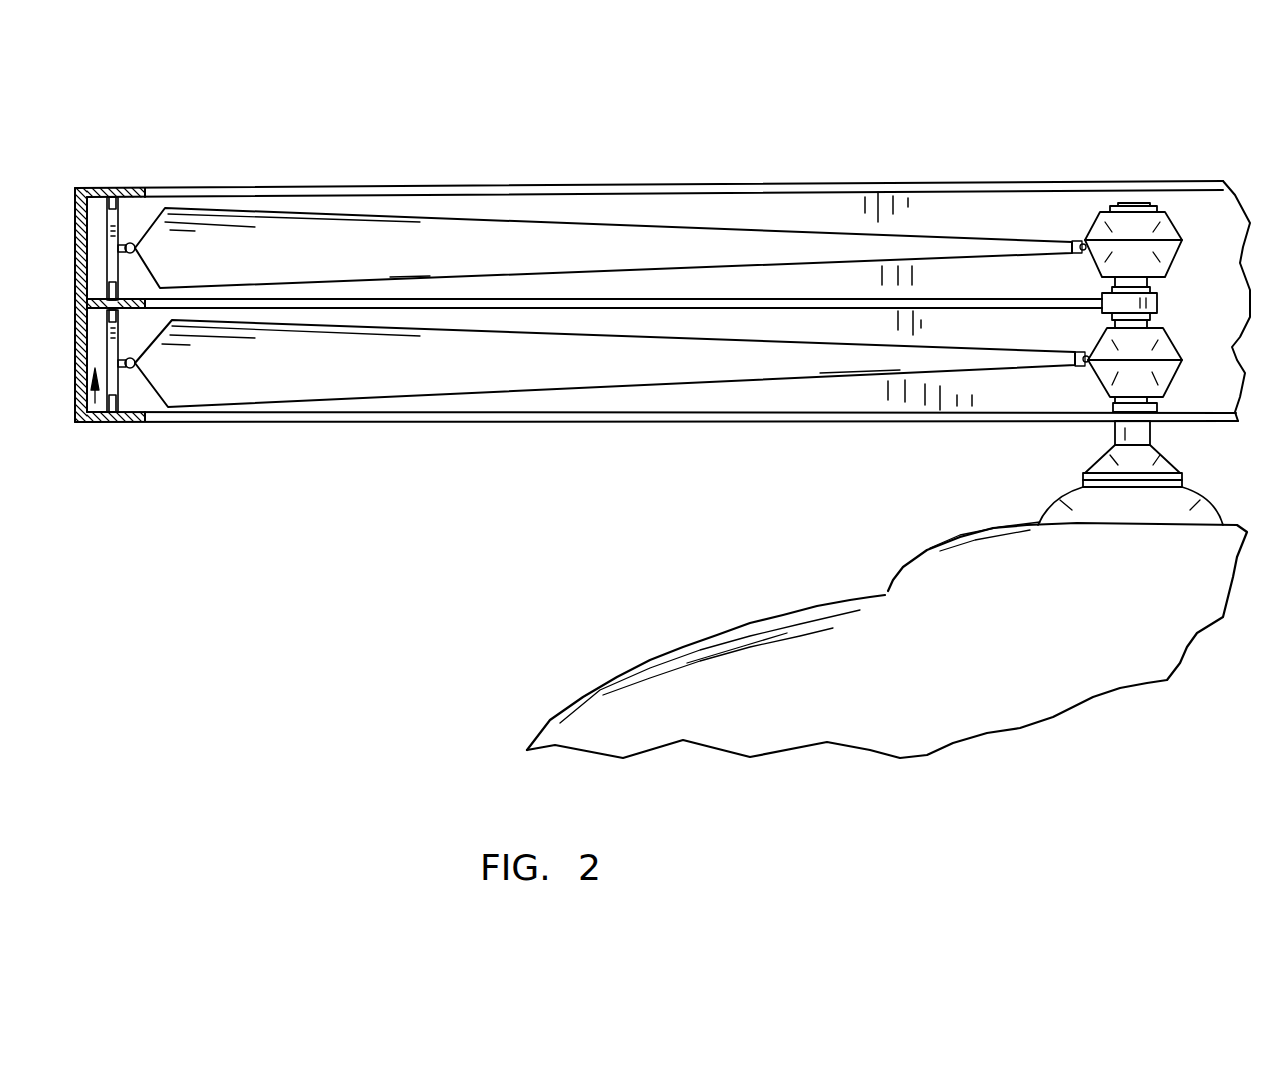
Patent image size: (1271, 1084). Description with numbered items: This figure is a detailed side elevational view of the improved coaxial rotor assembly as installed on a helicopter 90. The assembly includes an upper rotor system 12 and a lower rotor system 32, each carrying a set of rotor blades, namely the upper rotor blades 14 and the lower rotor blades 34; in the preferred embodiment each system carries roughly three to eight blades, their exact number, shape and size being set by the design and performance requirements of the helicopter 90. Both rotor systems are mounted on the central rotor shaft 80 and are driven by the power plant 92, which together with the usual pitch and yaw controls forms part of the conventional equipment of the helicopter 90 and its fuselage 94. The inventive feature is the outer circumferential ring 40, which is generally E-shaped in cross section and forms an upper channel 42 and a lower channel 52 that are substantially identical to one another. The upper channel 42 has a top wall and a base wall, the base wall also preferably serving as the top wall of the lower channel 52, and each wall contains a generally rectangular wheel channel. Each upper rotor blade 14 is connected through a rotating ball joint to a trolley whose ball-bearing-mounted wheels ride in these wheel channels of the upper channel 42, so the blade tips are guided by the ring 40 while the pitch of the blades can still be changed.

The upper rotor system 12 is at (1075, 222).
The upper rotor blades 14 is at (458, 250).
The lower rotor system 32 is at (1155, 346).
The lower rotor blades 34 is at (430, 365).
The outer circumferential ring 40 is at (96, 222).
The upper channel 42 is at (110, 212).
The lower channel 52 is at (95, 417).
The central rotor shaft 80 is at (1137, 210).
The helicopter 90 is at (650, 704).
The power plant 92 is at (1130, 567).
The fuselage 94 is at (950, 695).